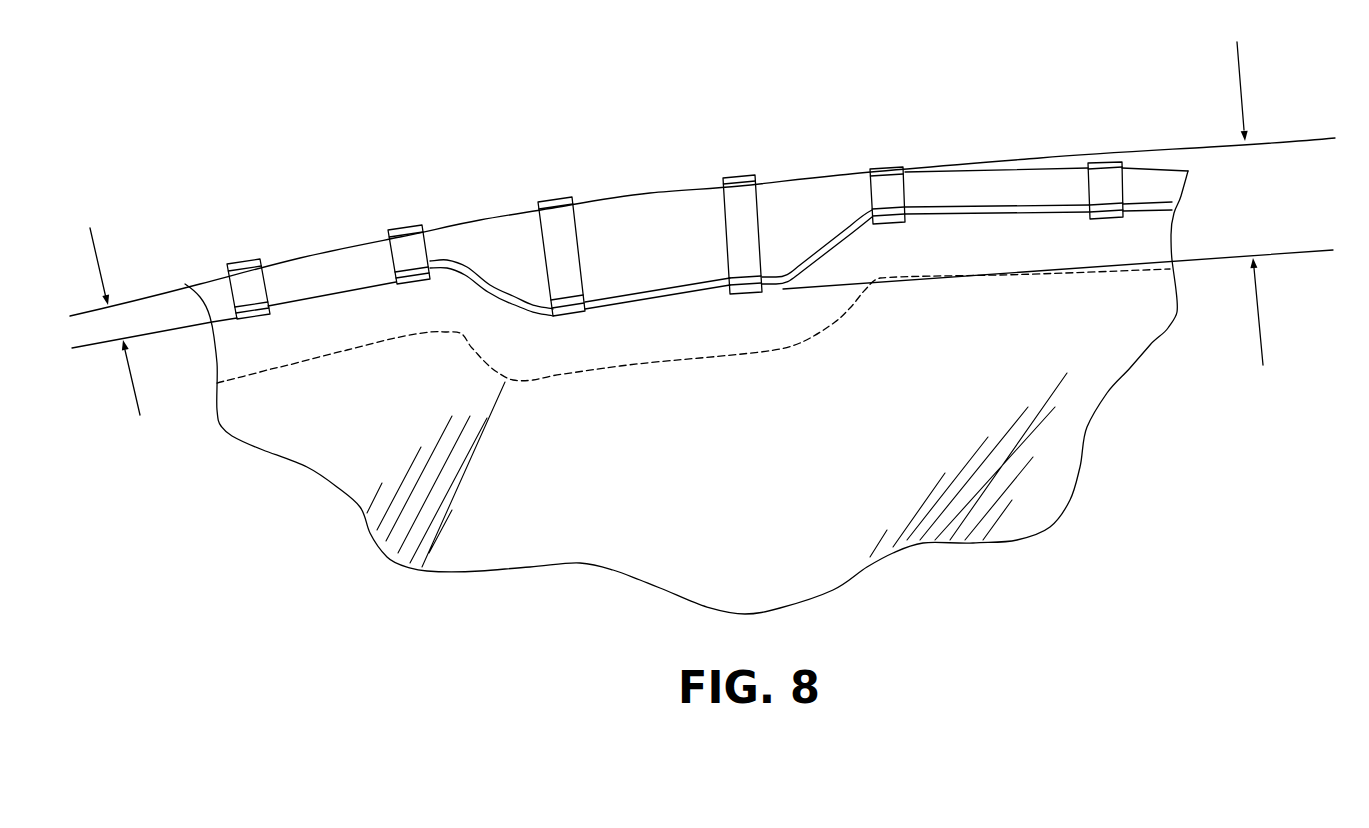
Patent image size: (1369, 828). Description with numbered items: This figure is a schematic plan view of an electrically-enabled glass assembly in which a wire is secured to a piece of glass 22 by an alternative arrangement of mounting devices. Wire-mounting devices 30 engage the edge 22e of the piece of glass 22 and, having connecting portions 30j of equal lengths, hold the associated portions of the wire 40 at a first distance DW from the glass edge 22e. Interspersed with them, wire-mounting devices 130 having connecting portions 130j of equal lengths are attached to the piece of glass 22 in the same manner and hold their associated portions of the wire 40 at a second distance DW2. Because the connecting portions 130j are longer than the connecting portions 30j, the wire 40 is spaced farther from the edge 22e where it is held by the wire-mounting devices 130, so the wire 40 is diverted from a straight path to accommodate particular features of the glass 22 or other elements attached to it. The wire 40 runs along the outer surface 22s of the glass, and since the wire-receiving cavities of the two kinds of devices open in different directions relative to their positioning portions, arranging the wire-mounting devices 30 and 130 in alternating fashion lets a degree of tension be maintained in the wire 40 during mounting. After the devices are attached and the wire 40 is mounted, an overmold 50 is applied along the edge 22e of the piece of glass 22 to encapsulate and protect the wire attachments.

The piece of glass 22 is at (834, 412).
The edge of the piece of glass 22e is at (648, 192).
The outer surface 22s is at (983, 356).
The wire-mounting device 30 is at (253, 243).
The connecting portion 30j is at (243, 278).
The wire 40 is at (480, 283).
The overmold 50 is at (1112, 277).
The wire-mounting device 130 is at (742, 308).
The connecting portion 130j is at (567, 243).
The first distance DW is at (104, 262).
The second distance DW2 is at (1248, 102).